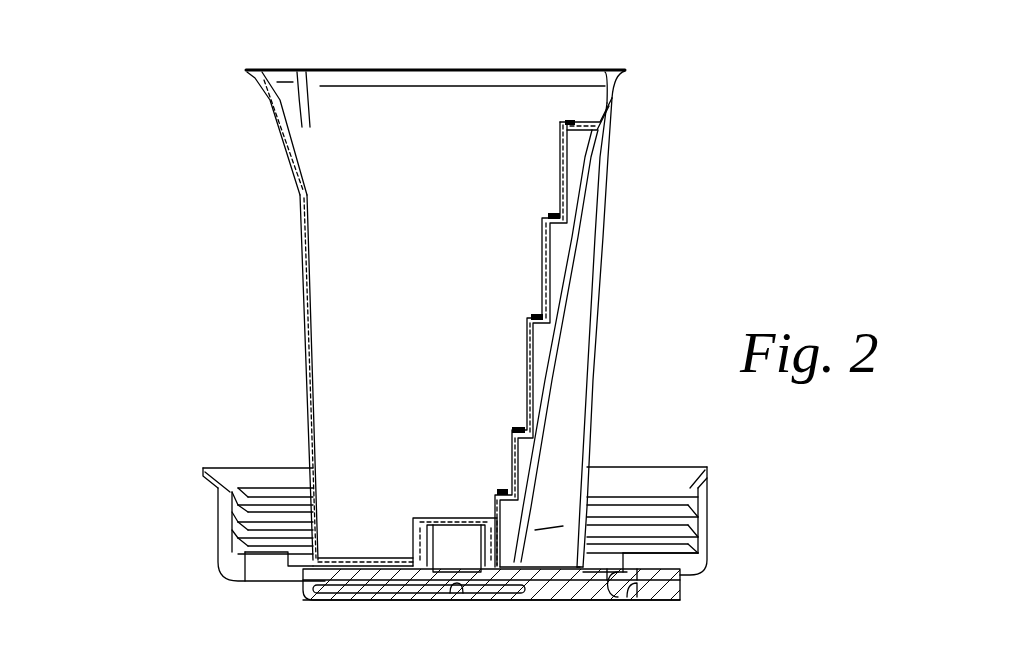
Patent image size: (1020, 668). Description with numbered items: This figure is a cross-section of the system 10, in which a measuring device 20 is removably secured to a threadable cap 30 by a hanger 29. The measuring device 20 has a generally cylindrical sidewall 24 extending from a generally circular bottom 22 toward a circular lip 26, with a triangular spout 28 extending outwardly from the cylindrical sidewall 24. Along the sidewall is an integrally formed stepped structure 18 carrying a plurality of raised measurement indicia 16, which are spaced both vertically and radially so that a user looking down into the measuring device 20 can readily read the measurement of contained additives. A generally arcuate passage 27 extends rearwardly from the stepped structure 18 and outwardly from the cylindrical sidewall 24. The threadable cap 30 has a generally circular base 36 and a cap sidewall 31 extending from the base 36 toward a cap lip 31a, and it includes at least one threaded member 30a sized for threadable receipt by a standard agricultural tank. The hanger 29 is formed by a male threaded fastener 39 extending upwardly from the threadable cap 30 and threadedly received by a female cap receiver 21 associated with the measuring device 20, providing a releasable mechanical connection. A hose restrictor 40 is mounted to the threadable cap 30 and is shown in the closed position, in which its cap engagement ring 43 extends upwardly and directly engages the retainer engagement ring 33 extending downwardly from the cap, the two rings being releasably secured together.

The system 10 is at (150, 79).
The raised measurement indicia 16 is at (547, 217).
The stepped structure 18 is at (551, 253).
The measuring device 20 is at (215, 233).
The cap receiver 21 is at (413, 522).
The bottom 22 is at (345, 558).
The cylindrical sidewall 24 is at (300, 293).
The circular lip 26 is at (342, 76).
The arcuate passage 27 is at (578, 328).
The triangular spout 28 is at (278, 133).
The hanger 29 is at (455, 560).
The threadable cap 30 is at (215, 547).
The threaded member 30a is at (670, 515).
The cap sidewall 31 is at (215, 497).
The cap lip 31a is at (210, 480).
The retainer engagement ring 33 is at (607, 597).
The base 36 is at (262, 580).
The threaded fastener 39 is at (483, 563).
The hose restrictor 40 is at (568, 603).
The cap engagement ring 43 is at (637, 587).